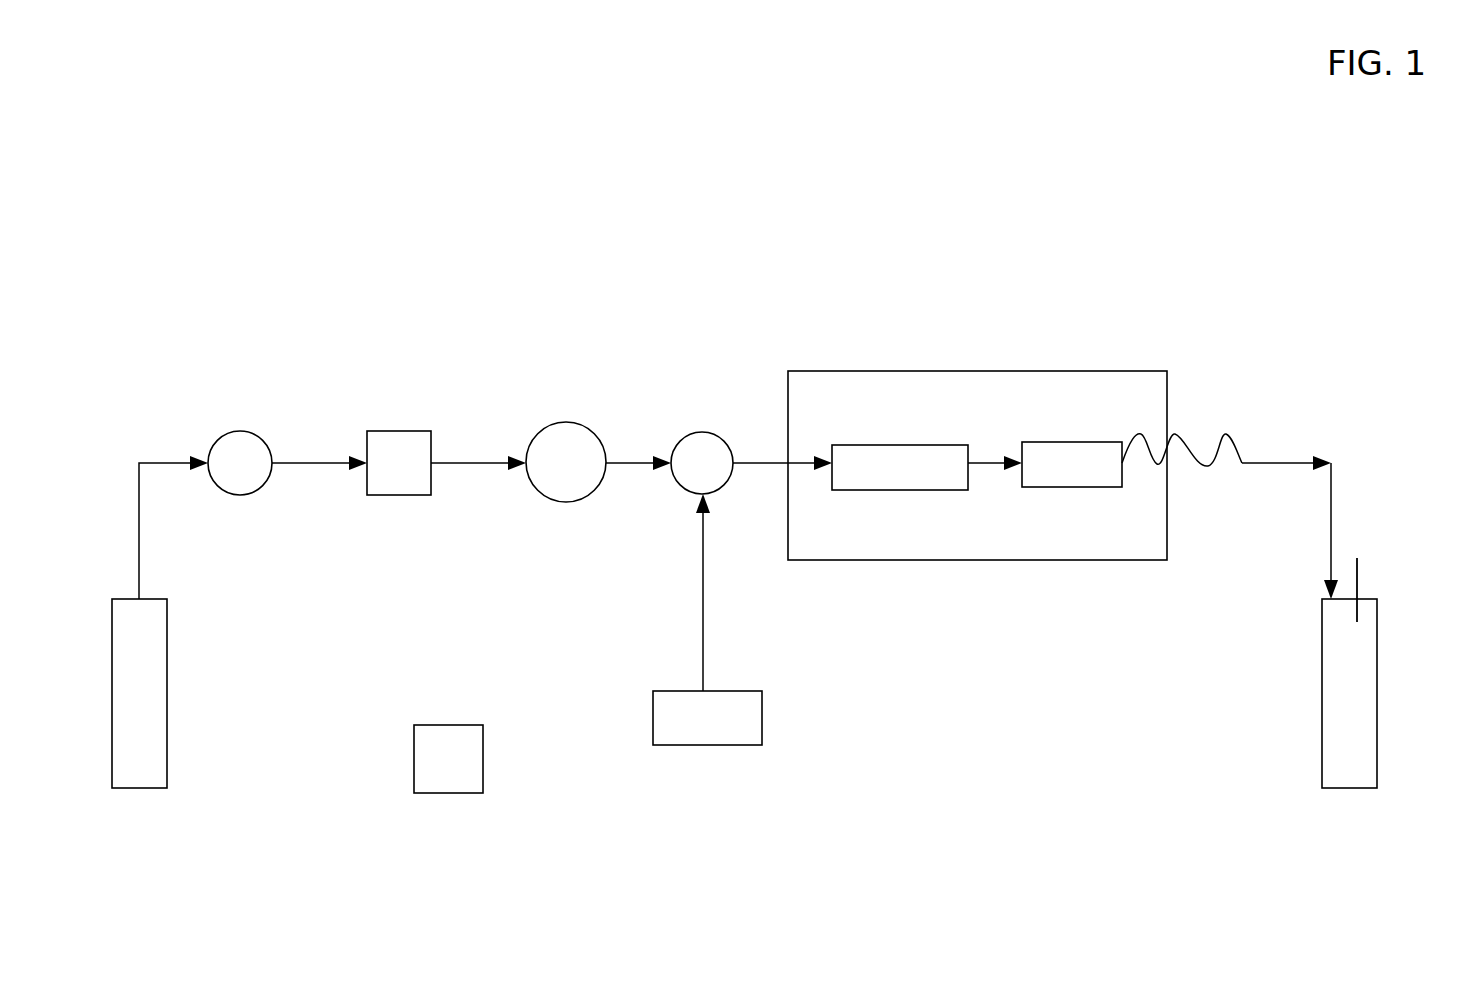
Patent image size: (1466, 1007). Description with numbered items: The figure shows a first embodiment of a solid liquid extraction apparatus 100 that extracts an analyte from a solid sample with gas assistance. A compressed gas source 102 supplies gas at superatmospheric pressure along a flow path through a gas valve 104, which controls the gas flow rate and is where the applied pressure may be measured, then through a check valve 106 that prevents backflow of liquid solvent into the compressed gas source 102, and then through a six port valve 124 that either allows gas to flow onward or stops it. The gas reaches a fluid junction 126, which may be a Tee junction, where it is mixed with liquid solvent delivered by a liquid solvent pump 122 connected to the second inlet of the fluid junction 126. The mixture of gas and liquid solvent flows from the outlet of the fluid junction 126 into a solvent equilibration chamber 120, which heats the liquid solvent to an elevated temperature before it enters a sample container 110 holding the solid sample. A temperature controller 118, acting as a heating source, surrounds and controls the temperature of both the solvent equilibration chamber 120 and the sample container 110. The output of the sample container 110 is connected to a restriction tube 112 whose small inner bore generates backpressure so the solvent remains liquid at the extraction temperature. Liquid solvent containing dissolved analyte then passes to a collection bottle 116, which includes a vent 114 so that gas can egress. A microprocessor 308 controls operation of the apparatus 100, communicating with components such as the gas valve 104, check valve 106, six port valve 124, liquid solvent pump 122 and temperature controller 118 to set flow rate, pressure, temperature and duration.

The solid liquid extraction apparatus 100 is at (978, 182).
The compressed gas source 102 is at (167, 770).
The gas valve 104 is at (240, 432).
The check valve 106 is at (398, 431).
The sample container 110 is at (1036, 442).
The restriction tube 112 is at (1195, 445).
The vent 114 is at (1358, 577).
The collection bottle 116 is at (1322, 748).
The temperature controller 118 is at (888, 560).
The solvent equilibration chamber 120 is at (872, 445).
The liquid solvent pump 122 is at (762, 728).
The six port valve 124 is at (556, 422).
The fluid junction 126 is at (698, 432).
The microprocessor 308 is at (483, 777).